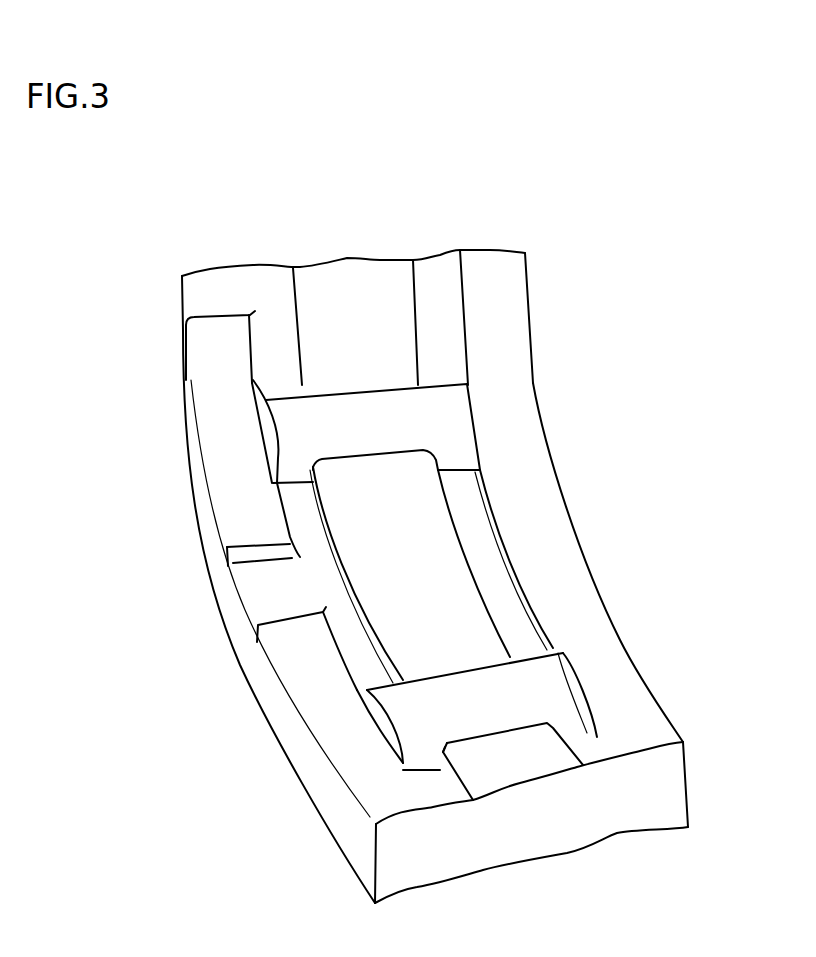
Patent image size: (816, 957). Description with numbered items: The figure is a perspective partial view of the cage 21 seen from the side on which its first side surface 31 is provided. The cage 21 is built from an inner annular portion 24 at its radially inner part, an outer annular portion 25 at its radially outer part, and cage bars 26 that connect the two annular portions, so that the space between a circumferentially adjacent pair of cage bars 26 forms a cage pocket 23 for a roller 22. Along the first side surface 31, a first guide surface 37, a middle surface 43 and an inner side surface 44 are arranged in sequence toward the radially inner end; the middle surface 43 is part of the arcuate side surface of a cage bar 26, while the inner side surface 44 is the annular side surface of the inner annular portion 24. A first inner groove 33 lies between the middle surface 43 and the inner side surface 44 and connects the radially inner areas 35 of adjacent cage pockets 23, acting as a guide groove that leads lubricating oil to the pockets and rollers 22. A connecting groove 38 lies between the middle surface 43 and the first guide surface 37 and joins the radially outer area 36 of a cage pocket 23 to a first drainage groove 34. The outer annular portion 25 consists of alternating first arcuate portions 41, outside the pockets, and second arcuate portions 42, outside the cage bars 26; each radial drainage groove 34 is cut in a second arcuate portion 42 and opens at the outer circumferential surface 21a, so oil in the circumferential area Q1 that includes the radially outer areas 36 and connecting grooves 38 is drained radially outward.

The cage 21 is at (400, 258).
The outer circumferential surface 21a is at (245, 636).
The roller 22 is at (440, 388).
The cage pocket 23 is at (455, 425).
The inner annular portion 24 is at (530, 357).
The outer annular portion 25 is at (200, 533).
The cage bar 26 is at (477, 613).
The first side surface 31 is at (318, 300).
The first inner groove 33 is at (440, 283).
The first drainage groove 34 is at (207, 293).
The radially inner area 35 is at (460, 450).
The radially outer area 36 is at (282, 437).
The first guide surface 37 is at (212, 353).
The connecting groove 38 is at (275, 332).
The first arcuate portion 41 is at (220, 455).
The second arcuate portion 42 is at (237, 602).
The middle surface 43 is at (347, 278).
The inner side surface 44 is at (503, 283).
The circumferential area Q1 is at (443, 790).